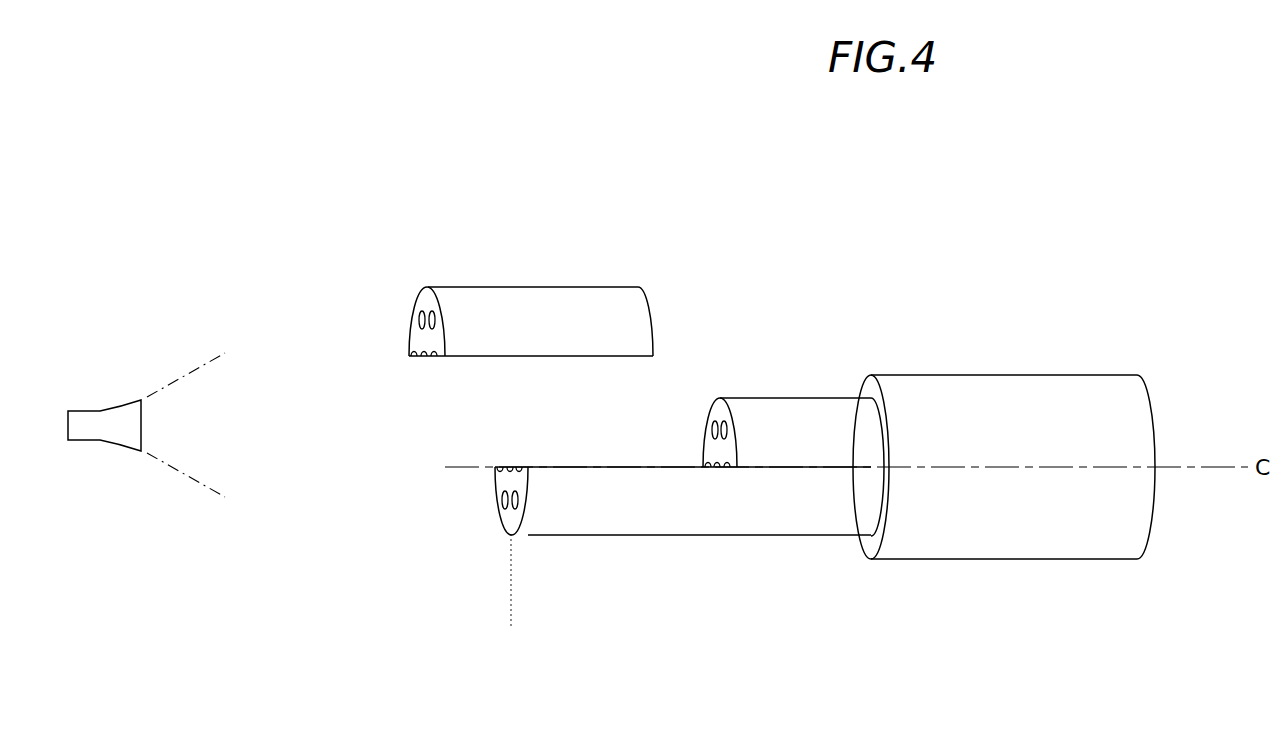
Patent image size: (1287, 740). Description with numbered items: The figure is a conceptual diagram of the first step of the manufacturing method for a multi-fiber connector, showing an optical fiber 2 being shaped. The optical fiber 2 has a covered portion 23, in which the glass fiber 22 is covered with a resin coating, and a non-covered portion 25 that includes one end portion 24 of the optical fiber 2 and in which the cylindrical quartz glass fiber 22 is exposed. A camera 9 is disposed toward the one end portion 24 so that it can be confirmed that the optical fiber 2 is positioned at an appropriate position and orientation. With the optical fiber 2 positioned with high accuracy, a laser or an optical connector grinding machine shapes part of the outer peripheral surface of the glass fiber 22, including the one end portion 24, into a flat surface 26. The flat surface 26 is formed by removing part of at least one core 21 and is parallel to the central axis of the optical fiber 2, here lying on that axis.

The optical fiber 2 is at (1028, 502).
The camera 9 is at (96, 441).
The core 21 is at (497, 469).
The glass fiber 22 is at (643, 540).
The covered portion 23 is at (868, 559).
The one end portion 24 is at (505, 524).
The non-covered portion 25 is at (868, 637).
The flat surface 26 is at (601, 467).